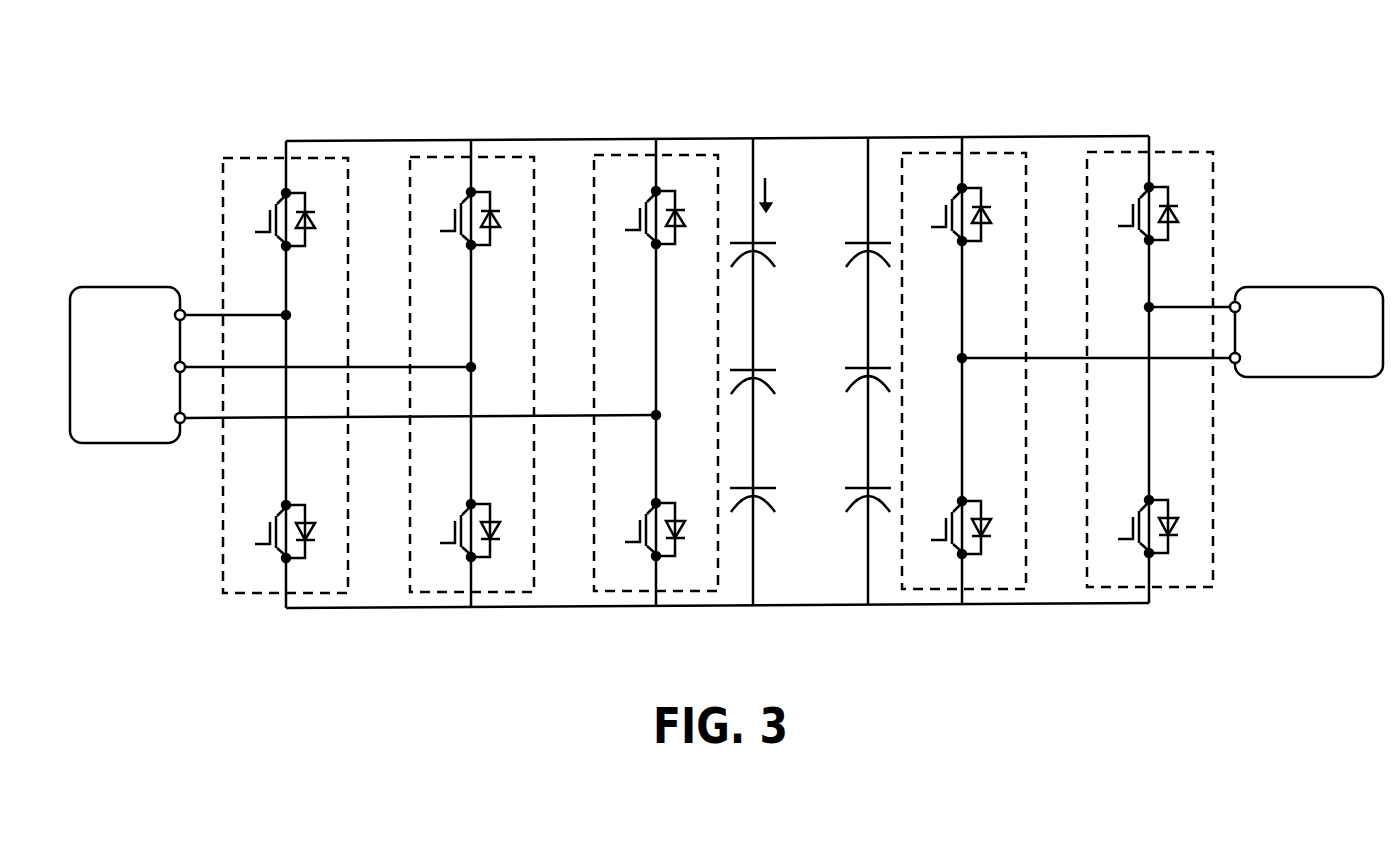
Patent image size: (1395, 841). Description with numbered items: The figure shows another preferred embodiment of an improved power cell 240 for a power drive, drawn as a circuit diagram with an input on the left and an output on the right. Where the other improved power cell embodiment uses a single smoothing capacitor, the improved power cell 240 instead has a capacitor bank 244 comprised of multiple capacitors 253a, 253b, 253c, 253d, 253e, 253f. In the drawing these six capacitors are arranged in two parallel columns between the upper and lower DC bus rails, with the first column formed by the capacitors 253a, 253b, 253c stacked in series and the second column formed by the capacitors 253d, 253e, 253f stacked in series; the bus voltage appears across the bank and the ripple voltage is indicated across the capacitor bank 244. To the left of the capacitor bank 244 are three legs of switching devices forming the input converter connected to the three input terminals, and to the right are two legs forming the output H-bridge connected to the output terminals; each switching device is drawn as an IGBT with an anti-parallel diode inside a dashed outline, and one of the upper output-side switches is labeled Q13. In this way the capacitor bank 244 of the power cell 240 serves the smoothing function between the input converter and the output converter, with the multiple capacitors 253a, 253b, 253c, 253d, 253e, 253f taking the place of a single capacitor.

The improved power cell 240 is at (390, 93).
The capacitor bank 244 is at (898, 127).
The capacitor 253a is at (768, 250).
The capacitor 253b is at (768, 378).
The capacitor 253c is at (768, 496).
The capacitor 253d is at (852, 248).
The capacitor 253e is at (850, 369).
The capacitor 253f is at (850, 489).
The IGBT switch Q13 is at (1168, 226).